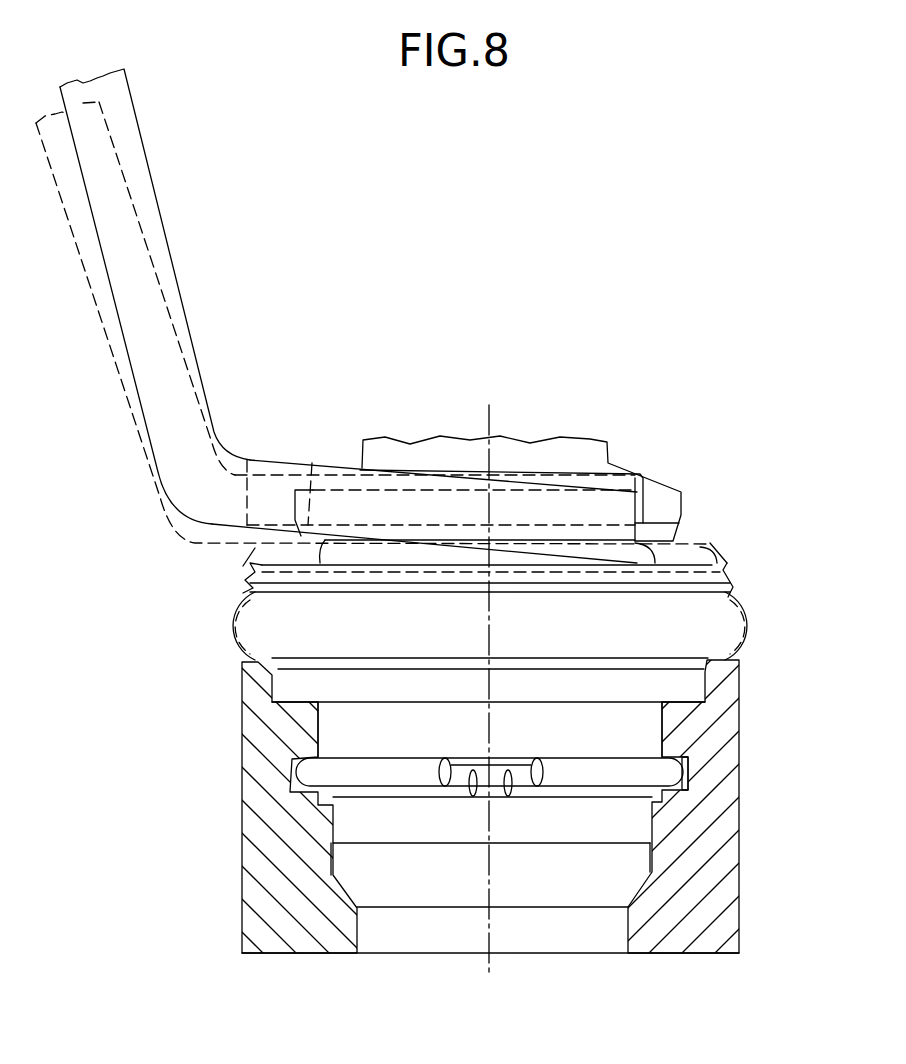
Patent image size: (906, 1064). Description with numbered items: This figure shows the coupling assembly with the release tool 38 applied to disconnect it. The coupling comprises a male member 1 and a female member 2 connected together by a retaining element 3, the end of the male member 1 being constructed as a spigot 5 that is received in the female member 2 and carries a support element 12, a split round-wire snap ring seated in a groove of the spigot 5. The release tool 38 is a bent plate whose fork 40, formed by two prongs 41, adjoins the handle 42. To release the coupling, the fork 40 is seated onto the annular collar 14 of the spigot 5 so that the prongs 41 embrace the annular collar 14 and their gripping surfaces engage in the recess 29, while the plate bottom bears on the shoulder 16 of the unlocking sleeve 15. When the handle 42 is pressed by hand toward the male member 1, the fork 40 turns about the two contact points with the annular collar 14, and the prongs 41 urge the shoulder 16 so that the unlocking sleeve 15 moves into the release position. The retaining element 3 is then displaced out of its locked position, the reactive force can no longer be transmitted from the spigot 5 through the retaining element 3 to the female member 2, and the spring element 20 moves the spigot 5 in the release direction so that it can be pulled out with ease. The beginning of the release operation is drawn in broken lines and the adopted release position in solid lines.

The male member 1 is at (618, 437).
The female member 2 is at (256, 890).
The retaining element 3 is at (305, 767).
The spigot 5 is at (643, 900).
The support element 12 is at (354, 793).
The annular collar 14 is at (673, 503).
The unlocking sleeve 15 is at (630, 725).
The shoulder 16 is at (693, 578).
The spring element 20 is at (236, 631).
The recess 29 is at (684, 538).
The release tool 38 is at (160, 185).
The fork 40 is at (292, 462).
The prongs 41 is at (552, 502).
The handle 42 is at (130, 127).